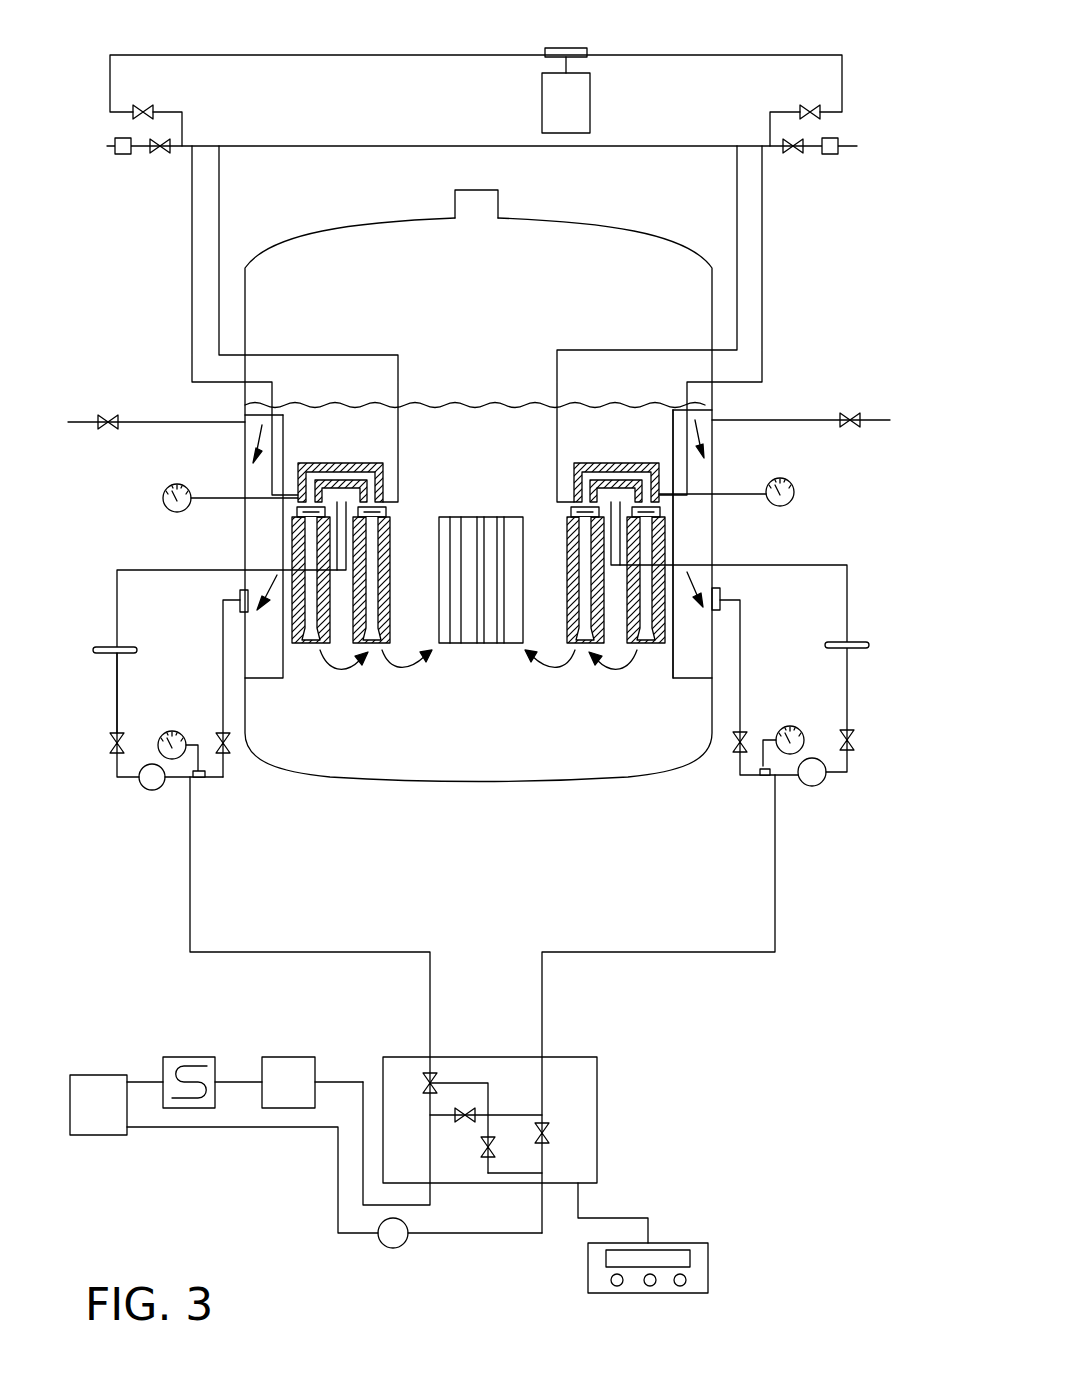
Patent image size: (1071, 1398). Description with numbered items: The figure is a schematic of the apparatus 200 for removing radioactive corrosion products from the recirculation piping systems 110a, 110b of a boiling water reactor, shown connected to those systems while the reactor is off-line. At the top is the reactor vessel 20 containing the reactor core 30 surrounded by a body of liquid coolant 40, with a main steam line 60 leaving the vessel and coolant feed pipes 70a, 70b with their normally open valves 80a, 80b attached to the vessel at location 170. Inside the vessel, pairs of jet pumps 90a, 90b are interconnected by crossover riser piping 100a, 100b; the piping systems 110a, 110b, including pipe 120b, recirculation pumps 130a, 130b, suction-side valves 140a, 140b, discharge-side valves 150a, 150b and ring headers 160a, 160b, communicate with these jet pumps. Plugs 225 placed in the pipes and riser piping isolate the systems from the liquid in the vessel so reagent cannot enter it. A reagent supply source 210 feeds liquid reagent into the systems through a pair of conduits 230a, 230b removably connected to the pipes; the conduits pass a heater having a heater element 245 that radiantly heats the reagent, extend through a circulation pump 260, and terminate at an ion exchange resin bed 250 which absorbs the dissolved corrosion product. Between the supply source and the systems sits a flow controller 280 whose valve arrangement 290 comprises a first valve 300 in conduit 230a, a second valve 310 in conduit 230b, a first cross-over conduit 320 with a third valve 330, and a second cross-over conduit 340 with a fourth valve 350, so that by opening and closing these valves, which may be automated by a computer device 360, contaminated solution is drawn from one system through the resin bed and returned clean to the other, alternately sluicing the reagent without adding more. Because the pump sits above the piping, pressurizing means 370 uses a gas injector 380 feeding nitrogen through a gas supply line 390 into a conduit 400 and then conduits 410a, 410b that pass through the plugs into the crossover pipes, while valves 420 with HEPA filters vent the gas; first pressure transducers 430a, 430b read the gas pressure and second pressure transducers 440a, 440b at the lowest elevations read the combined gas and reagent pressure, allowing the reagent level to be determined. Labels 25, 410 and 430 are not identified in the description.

The reactor vessel 20 is at (712, 290).
The fluid passage channel 25 is at (250, 463).
The nuclear reactor core 30 is at (505, 645).
The liquid coolant 40 is at (712, 452).
The main steam line 60 is at (500, 195).
The coolant feed pipe 70a is at (878, 420).
The coolant feed pipe 70b is at (82, 422).
The valve 80a is at (843, 425).
The valve 80b is at (116, 420).
The jet pump 90a is at (605, 533).
The jet pump 90b is at (355, 537).
The crossover riser piping 100a is at (574, 478).
The crossover riser piping 100b is at (383, 486).
The recirculation piping system 110a is at (847, 588).
The recirculation piping system 110b is at (103, 560).
The pipe 120b is at (117, 716).
The recirculation pump 130a is at (810, 788).
The recirculation pump 130b is at (151, 792).
The pipe valve 140a is at (759, 687).
The pipe valve 140b is at (230, 750).
The valve 150a is at (855, 736).
The valve 150b is at (112, 748).
The ring header 160a is at (856, 643).
The ring header 160b is at (102, 648).
The location 170 is at (245, 415).
The apparatus 200 is at (786, 1000).
The reagent supply source 210 is at (295, 1057).
The plug 225 is at (240, 598).
The conduit 230a is at (640, 952).
The conduit 230b is at (290, 952).
The heater element 245 is at (188, 1057).
The ion exchange resin bed 250 is at (98, 1135).
The circulation pump 260 is at (380, 1243).
The flow controller 280 is at (597, 1078).
The valve arrangement 290 is at (645, 1135).
The first valve 300 is at (552, 1140).
The second valve 310 is at (425, 1080).
The first cross-over conduit 320 is at (455, 1083).
The third valve 330 is at (490, 1155).
The second cross-over conduit 340 is at (520, 1113).
The fourth valve 350 is at (466, 1124).
The computer device 360 is at (708, 1252).
The pressurizing means 370 is at (790, 278).
The gas injector 380 is at (588, 100).
The gas supply line 390 is at (670, 52).
The conduit 400 is at (297, 146).
The gas valve 410 is at (152, 108).
The conduit 410a is at (221, 243).
The conduit 410b is at (760, 245).
The valve 420 is at (165, 158).
The pressure regulator 430 is at (122, 156).
The first pressure transducer 430a is at (794, 500).
The first pressure transducer 430b is at (178, 484).
The second pressure transducer 440a is at (790, 726).
The second pressure transducer 440b is at (175, 731).